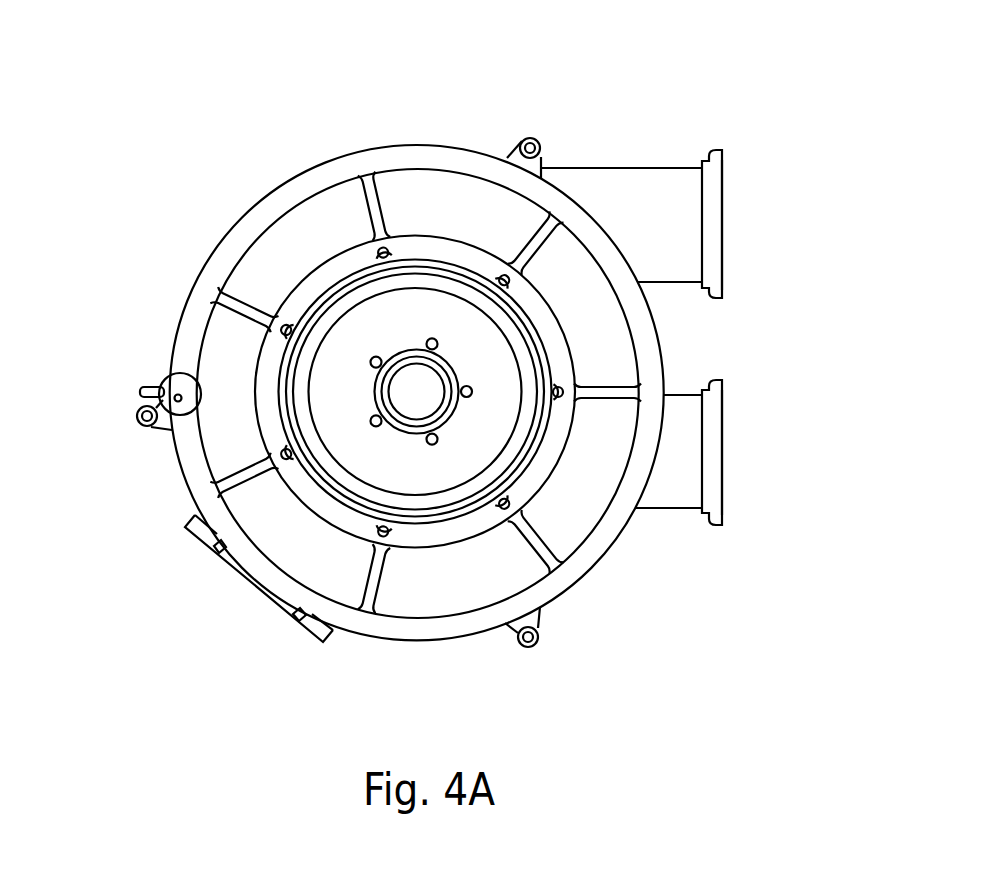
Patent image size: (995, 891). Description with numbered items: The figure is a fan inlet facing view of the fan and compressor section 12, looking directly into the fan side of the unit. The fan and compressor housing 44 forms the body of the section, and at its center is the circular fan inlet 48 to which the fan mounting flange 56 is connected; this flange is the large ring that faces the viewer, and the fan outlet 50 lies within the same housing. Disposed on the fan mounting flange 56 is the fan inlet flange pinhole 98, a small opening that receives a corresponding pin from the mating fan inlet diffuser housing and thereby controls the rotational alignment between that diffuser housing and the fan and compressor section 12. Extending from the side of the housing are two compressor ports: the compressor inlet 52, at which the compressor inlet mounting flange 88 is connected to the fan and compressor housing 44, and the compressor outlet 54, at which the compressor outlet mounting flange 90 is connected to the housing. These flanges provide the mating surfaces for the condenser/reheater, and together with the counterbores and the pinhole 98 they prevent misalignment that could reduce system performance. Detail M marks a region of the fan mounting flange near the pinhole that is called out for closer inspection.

The fan and compressor section 12 is at (135, 85).
The fan mounting flange 56 is at (296, 187).
The fan inlet 48 is at (597, 503).
The fan outlet 50 is at (418, 474).
The fan and compressor housing 44 is at (589, 167).
The compressor outlet mounting flange 90 is at (723, 170).
The compressor outlet 54 is at (737, 217).
The compressor inlet mounting flange 88 is at (723, 495).
The compressor inlet 52 is at (737, 442).
The detail M is at (176, 396).
The fan inlet flange pinhole 98 is at (167, 382).